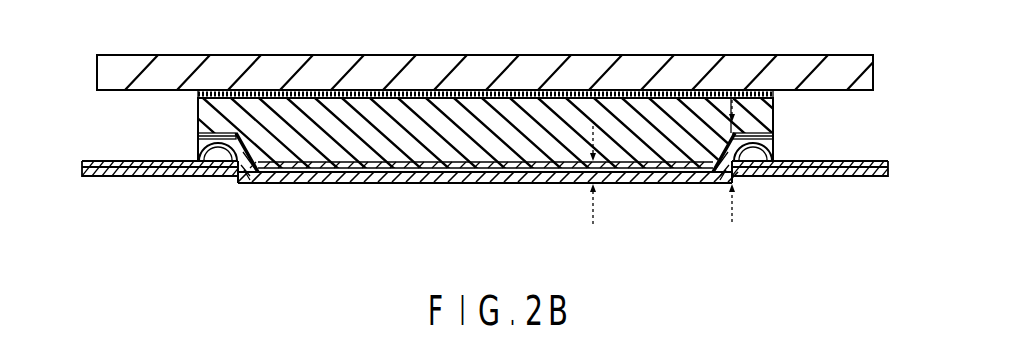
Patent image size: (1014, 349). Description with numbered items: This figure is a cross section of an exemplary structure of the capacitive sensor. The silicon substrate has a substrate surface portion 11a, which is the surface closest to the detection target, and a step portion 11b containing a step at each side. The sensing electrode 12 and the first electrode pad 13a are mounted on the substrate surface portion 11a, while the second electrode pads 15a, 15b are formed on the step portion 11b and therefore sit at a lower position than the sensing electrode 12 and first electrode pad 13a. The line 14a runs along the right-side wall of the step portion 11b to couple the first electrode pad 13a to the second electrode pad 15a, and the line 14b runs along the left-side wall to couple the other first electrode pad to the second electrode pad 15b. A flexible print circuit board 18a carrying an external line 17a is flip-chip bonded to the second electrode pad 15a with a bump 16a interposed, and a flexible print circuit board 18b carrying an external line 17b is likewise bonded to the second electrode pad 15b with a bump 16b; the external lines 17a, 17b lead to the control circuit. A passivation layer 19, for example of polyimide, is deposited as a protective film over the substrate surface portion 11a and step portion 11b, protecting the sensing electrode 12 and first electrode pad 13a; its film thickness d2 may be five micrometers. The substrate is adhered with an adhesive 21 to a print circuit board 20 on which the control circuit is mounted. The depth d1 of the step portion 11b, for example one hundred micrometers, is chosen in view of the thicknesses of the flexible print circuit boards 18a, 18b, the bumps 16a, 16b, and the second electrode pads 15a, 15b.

The print circuit board 20 is at (447, 68).
The adhesive 21 is at (527, 90).
The substrate surface portion 11a is at (249, 183).
The step portion 11b is at (208, 108).
The sensing electrode 12 is at (371, 173).
The first electrode pad 13a is at (287, 184).
The line 14a is at (775, 135).
The line 14b is at (205, 136).
The second electrode pad 15a is at (778, 152).
The second electrode pad 15b is at (200, 146).
The bump 16a is at (770, 178).
The bump 16b is at (206, 177).
The external line 17a is at (888, 161).
The external line 17b is at (83, 161).
The flexible print circuit board 18a is at (888, 175).
The flexible print circuit board 18b is at (83, 175).
The passivation layer 19 is at (440, 180).
The depth of the step portion d1 is at (732, 175).
The film thickness of the passivation layer d2 is at (593, 189).